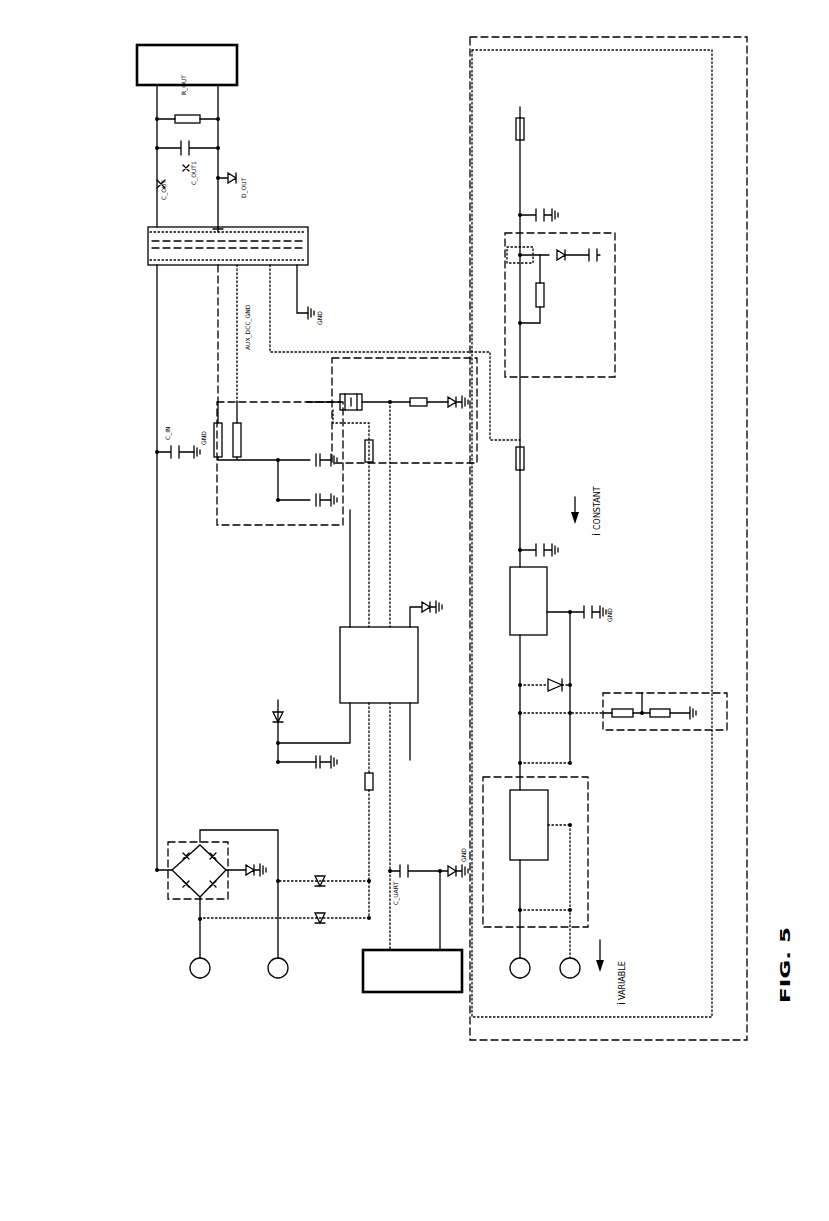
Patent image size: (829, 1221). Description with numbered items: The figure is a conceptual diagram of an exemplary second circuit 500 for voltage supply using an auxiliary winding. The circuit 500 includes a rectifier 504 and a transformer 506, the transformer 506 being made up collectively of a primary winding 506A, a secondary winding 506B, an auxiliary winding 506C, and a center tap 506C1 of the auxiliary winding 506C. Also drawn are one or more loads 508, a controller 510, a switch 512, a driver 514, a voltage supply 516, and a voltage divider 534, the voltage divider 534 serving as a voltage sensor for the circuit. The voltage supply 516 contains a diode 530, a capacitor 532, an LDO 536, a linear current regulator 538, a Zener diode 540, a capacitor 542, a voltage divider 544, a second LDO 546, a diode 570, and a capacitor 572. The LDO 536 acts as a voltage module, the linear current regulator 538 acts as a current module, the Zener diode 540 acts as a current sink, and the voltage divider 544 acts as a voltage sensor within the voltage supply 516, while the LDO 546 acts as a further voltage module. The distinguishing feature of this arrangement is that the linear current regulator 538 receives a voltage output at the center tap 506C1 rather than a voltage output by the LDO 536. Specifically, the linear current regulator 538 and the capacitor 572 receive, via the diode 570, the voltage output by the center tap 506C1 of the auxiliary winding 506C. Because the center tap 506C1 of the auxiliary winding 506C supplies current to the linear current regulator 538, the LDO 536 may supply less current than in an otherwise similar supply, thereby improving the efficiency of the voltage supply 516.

The second circuit 500 is at (70, 88).
The rectifier 504 is at (167, 897).
The transformer 506 is at (147, 243).
The primary winding 506A is at (166, 268).
The secondary winding 506B is at (223, 226).
The auxiliary winding 506C is at (226, 268).
The center tap 506C1 is at (268, 285).
The loads 508 is at (137, 86).
The controller 510 is at (362, 986).
The switch 512 is at (368, 356).
The driver 514 is at (338, 659).
The voltage supply 516 is at (470, 1030).
The diode 530 is at (519, 173).
The capacitor 532 is at (550, 208).
The voltage divider 534 is at (216, 512).
The LDO 536 is at (588, 378).
The linear current regulator 538 is at (512, 636).
The Zener diode 540 is at (570, 684).
The capacitor 542 is at (572, 762).
The voltage divider 544 is at (717, 731).
The LDO 546 is at (498, 928).
The diode 570 is at (519, 520).
The capacitor 572 is at (551, 547).